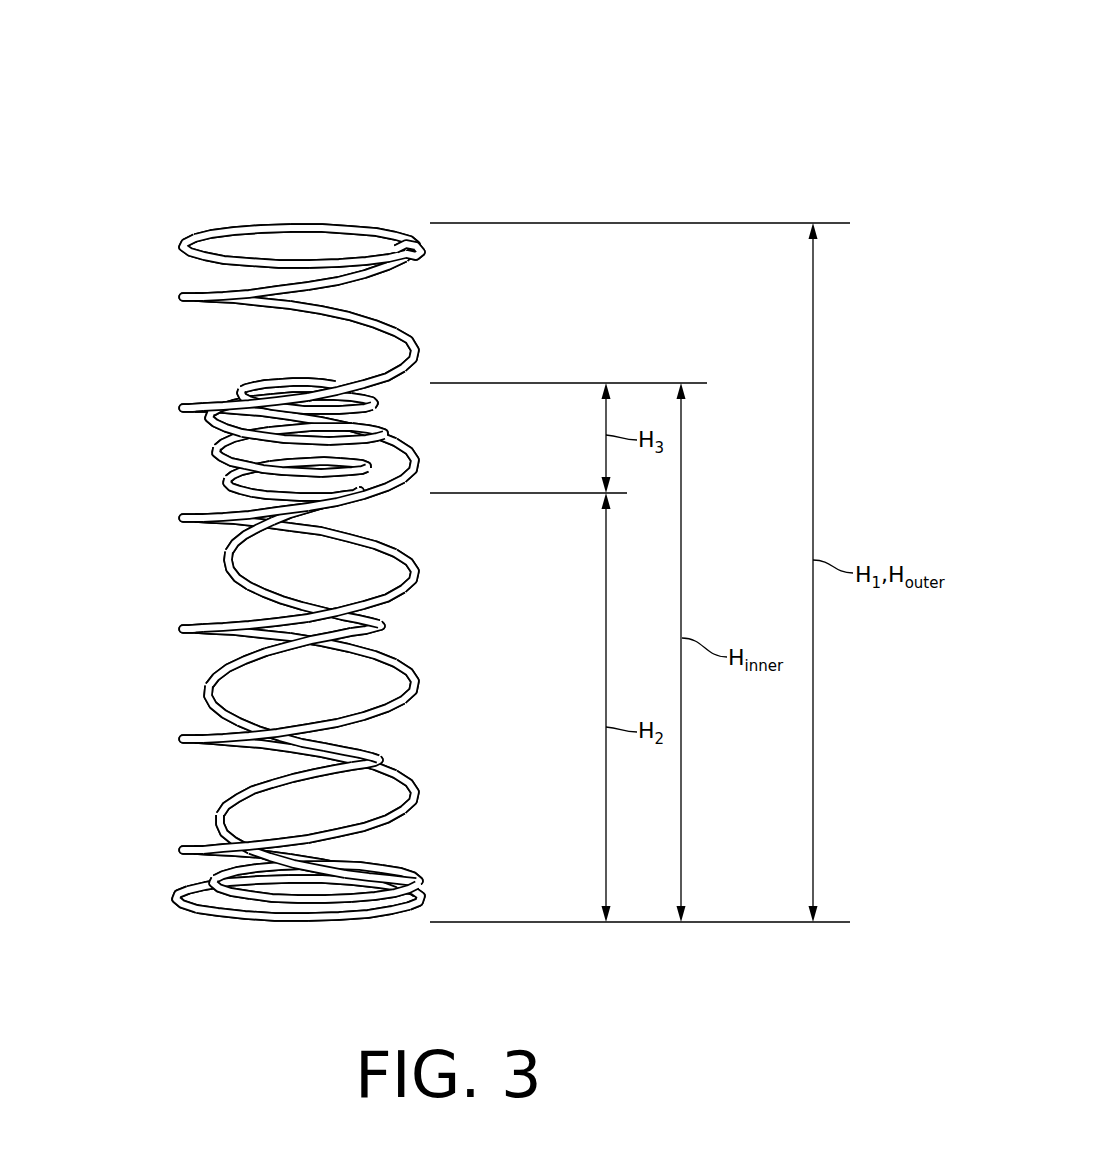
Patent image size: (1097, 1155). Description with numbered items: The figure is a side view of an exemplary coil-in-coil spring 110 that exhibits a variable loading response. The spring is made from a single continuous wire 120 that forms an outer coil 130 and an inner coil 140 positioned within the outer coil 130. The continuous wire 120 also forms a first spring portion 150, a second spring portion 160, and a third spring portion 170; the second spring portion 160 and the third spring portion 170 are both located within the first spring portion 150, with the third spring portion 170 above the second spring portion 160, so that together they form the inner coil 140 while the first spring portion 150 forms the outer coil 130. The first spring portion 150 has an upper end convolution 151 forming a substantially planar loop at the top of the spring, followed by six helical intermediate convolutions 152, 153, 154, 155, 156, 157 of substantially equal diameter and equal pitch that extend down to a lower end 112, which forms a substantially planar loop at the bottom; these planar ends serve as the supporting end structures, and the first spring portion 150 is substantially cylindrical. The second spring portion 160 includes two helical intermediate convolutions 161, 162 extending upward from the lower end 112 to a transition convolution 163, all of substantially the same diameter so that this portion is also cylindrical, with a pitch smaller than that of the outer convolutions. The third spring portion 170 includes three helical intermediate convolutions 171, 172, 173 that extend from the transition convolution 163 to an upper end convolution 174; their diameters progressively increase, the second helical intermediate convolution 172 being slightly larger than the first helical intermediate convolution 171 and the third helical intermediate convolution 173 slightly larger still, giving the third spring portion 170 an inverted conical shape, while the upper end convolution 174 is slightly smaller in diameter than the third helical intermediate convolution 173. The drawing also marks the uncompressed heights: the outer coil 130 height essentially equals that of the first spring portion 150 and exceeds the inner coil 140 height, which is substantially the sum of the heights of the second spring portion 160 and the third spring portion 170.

The coil-in-coil spring 110 is at (162, 106).
The lower end 112 is at (412, 916).
The continuous wire 120 is at (330, 224).
The outer coil 130 is at (412, 558).
The inner coil 140 is at (400, 607).
The first spring portion 150 is at (416, 682).
The second spring portion 160 is at (392, 628).
The third spring portion 170 is at (420, 422).
The upper end convolution 151 is at (183, 238).
The helical intermediate convolution 152 is at (182, 295).
The helical intermediate convolution 153 is at (186, 408).
The helical intermediate convolution 154 is at (186, 517).
The helical intermediate convolution 155 is at (186, 626).
The helical intermediate convolution 156 is at (186, 735).
The helical intermediate convolution 157 is at (183, 850).
The helical intermediate convolution 161 is at (216, 815).
The helical intermediate convolution 162 is at (209, 690).
The transition convolution 163 is at (230, 553).
The first helical intermediate convolution 171 is at (226, 483).
The second helical intermediate convolution 172 is at (218, 455).
The third helical intermediate convolution 173 is at (211, 422).
The upper end convolution 174 is at (256, 385).